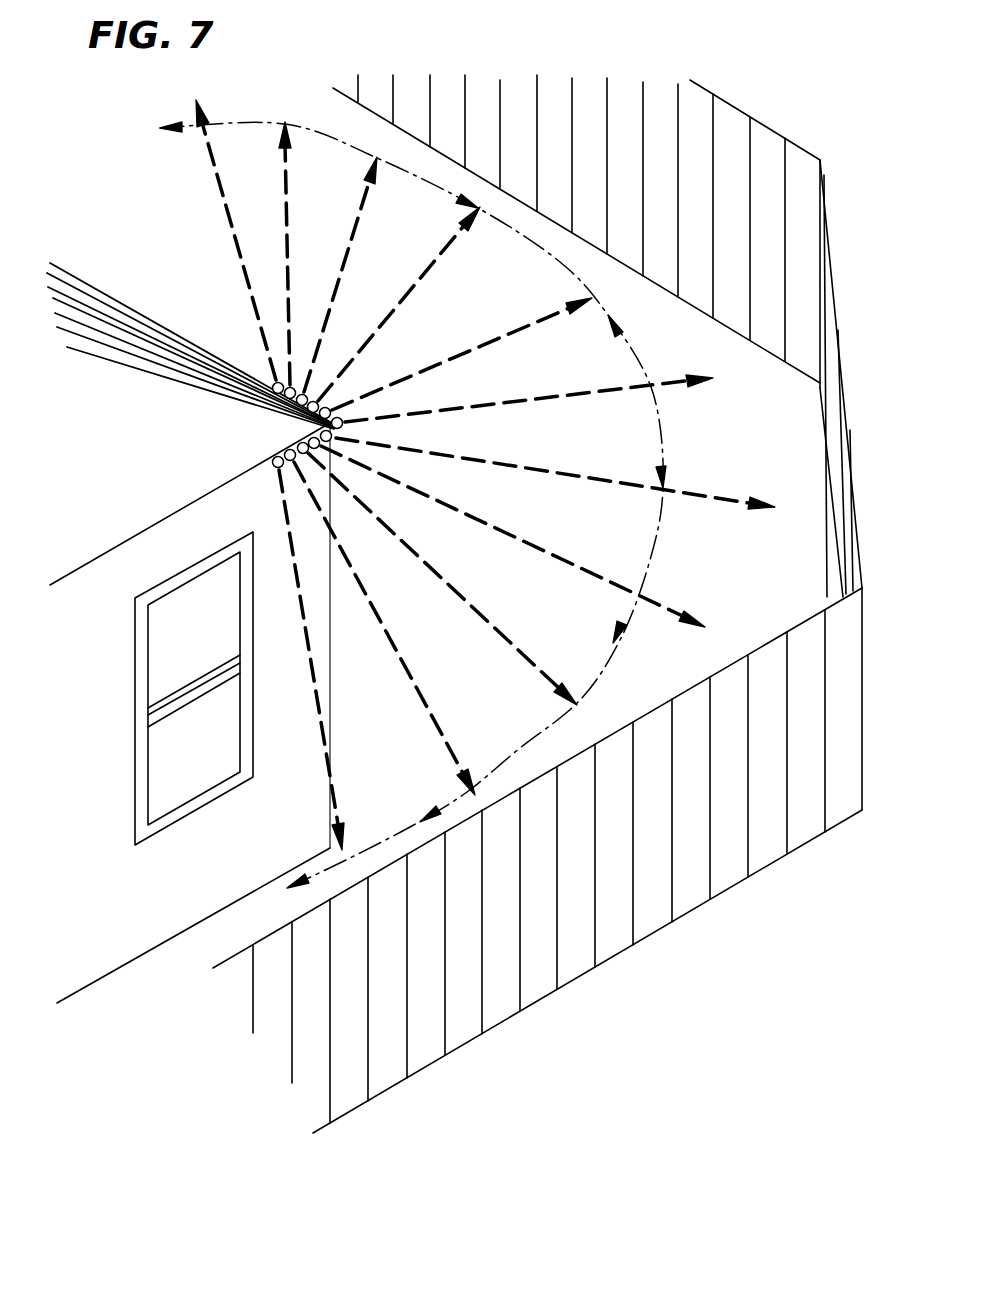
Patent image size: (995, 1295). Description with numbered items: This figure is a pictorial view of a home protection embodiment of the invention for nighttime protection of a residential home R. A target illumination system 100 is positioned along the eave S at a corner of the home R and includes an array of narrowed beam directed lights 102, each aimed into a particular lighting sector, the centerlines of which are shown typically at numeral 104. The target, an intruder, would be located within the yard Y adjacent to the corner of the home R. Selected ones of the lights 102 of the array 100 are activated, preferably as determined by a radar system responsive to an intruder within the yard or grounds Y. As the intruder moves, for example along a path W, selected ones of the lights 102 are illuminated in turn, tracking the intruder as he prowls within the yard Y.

The target illumination system 100 is at (299, 434).
The narrowed beam directed lights 102 is at (343, 373).
The centerlines of the lighting sectors 104 is at (427, 410).
The residential home R is at (145, 316).
The eave S is at (252, 477).
The path W is at (655, 520).
The yard Y is at (764, 584).